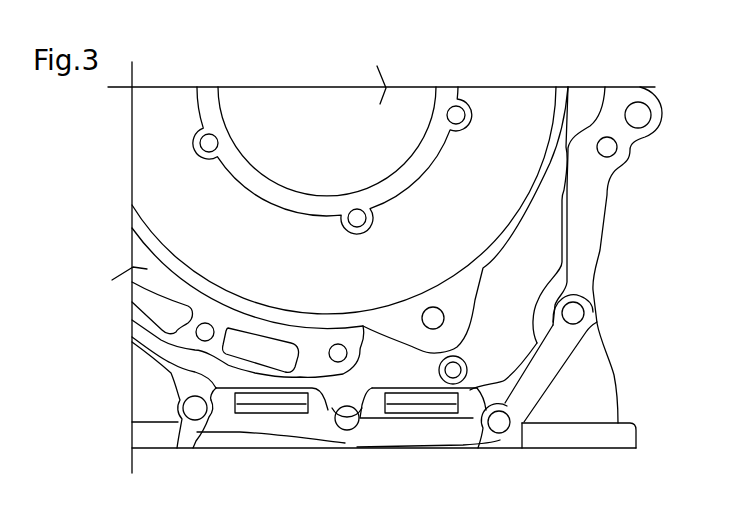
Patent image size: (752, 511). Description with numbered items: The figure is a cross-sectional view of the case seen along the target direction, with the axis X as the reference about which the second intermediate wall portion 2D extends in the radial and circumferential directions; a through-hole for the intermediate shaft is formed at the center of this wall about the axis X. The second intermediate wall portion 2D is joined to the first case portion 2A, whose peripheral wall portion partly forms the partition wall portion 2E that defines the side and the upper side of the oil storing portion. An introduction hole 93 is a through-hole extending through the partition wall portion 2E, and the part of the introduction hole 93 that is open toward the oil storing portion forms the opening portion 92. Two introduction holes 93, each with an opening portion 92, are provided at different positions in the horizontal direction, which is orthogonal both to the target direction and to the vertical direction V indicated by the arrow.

The axis X is at (328, 84).
The vertical direction V is at (69, 243).
The first case portion 2A is at (600, 197).
The second intermediate wall portion 2D is at (513, 108).
The partition wall portion 2E is at (470, 393).
The opening portion 92 is at (296, 411).
The introduction hole 93 is at (252, 399).